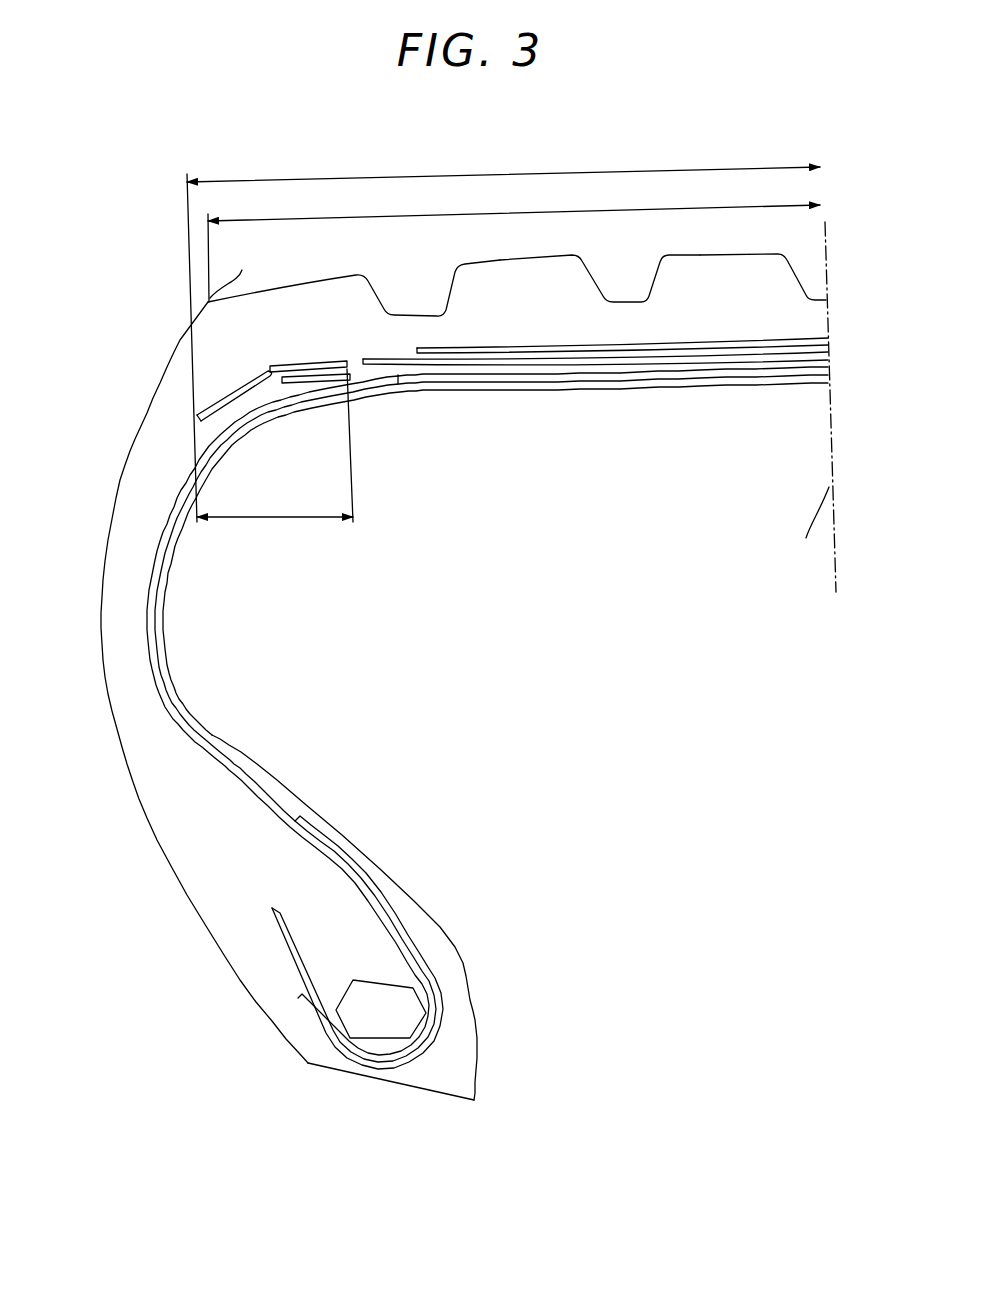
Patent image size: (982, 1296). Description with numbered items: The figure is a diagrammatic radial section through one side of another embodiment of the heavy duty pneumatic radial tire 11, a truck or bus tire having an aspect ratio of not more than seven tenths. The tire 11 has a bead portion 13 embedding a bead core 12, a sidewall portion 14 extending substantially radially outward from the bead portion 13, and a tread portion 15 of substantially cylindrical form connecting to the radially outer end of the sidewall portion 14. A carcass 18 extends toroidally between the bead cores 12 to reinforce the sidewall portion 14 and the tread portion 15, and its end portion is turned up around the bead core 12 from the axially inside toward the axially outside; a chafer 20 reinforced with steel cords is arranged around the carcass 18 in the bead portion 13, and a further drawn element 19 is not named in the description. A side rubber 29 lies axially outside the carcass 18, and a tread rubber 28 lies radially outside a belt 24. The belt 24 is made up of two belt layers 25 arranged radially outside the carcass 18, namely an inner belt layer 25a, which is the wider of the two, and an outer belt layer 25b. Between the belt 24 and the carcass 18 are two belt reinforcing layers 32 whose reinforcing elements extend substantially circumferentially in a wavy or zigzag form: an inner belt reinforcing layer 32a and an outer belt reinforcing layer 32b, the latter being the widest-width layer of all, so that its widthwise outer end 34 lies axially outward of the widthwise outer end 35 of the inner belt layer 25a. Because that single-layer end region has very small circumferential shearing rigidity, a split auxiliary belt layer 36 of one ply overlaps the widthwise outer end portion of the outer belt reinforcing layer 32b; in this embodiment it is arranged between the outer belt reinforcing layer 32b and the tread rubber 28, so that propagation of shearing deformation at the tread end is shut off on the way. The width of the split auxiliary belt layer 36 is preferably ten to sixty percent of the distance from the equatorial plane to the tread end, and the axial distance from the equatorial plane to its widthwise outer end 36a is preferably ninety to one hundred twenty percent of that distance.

The heavy duty pneumatic radial tire 11 is at (153, 333).
The bead core 12 is at (377, 1003).
The bead portion 13 is at (459, 960).
The sidewall portion 14 is at (178, 675).
The tread portion 15 is at (318, 283).
The carcass 18 is at (233, 760).
The inner liner 19 is at (195, 732).
The chafer 20 is at (373, 896).
The belt 24 is at (517, 343).
The belt layer 25 is at (597, 357).
The inner belt layer 25a is at (673, 360).
The outer belt layer 25b is at (740, 338).
The tread rubber 28 is at (565, 274).
The side rubber 29 is at (162, 802).
The belt reinforcing layer 32 is at (689, 371).
The inner belt reinforcing layer 32a is at (616, 372).
The outer belt reinforcing layer 32b is at (497, 370).
The widthwise outer end 34 is at (271, 366).
The widthwise outer end 35 is at (361, 362).
The split auxiliary belt layer 36 is at (214, 399).
The widthwise outer end 36a is at (197, 420).